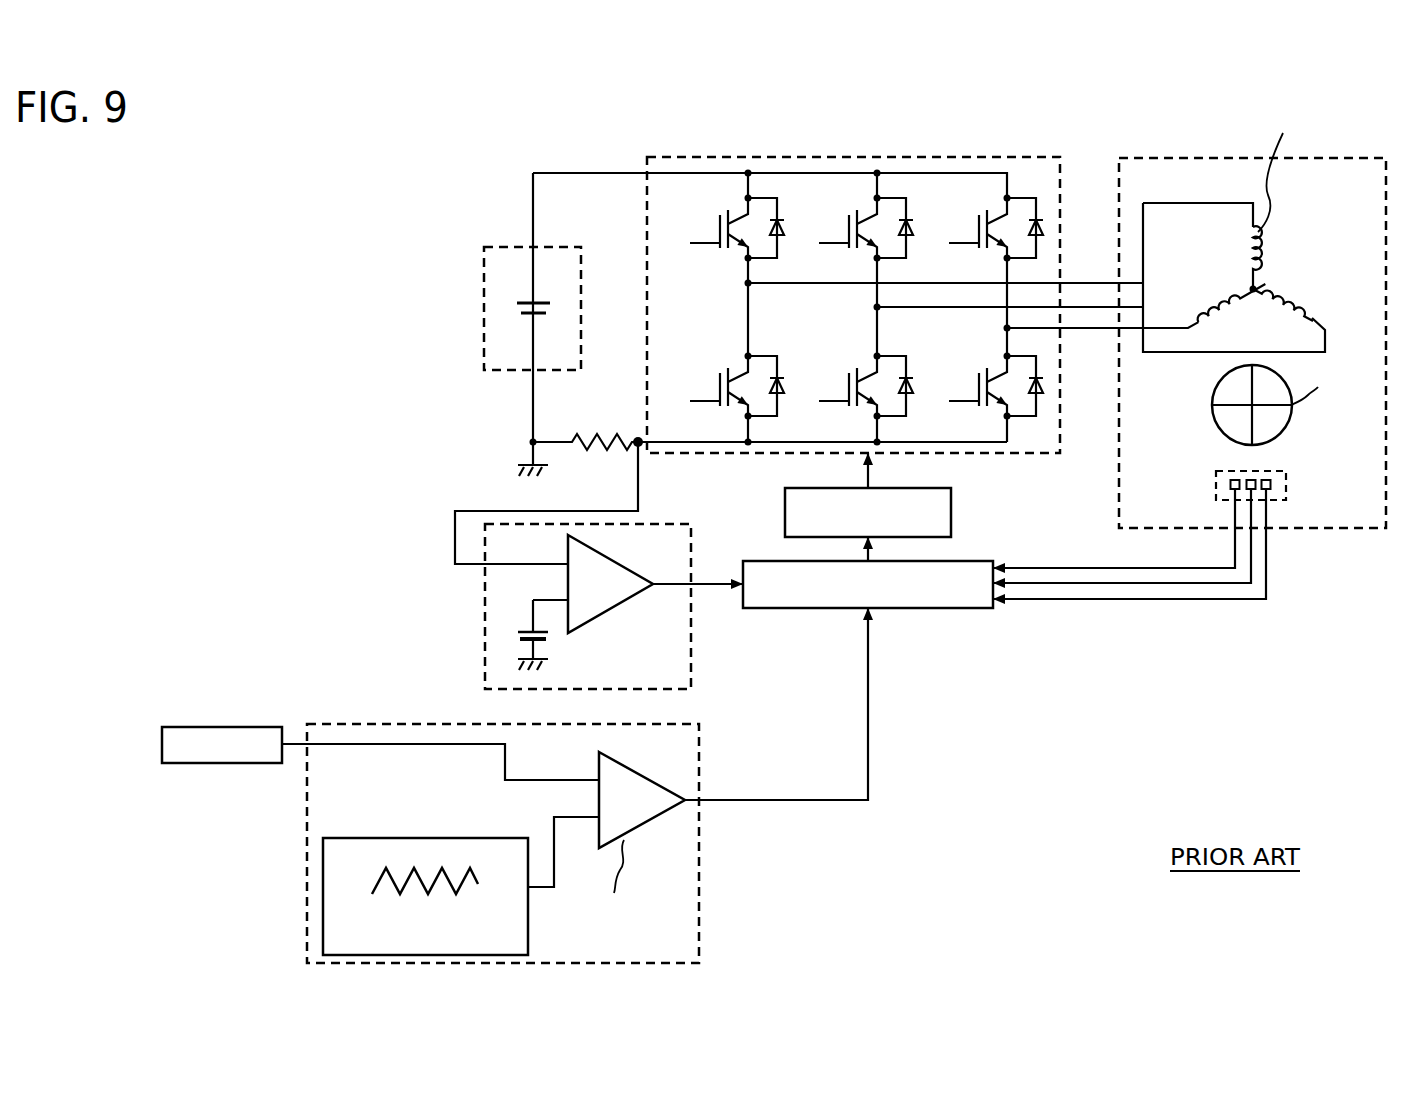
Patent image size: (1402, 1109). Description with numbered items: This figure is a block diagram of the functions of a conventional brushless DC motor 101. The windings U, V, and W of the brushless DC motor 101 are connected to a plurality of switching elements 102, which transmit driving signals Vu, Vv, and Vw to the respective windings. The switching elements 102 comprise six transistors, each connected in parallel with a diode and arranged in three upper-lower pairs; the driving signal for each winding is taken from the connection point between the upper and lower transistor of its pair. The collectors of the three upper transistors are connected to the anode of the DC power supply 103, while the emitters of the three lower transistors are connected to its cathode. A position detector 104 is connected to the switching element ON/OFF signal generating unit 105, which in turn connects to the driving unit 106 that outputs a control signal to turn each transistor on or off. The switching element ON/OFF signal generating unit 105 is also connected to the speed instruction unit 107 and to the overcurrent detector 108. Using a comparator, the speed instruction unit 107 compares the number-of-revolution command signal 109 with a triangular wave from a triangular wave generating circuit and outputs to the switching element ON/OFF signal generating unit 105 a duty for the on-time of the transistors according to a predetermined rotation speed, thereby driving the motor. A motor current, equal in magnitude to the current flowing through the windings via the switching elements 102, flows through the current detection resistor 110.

The brushless DC motor 101 is at (1140, 156).
The switching elements 102 is at (852, 157).
The DC power supply 103 is at (484, 304).
The position detector 104 is at (1275, 500).
The switching element ON/OFF signal generating unit 105 is at (788, 611).
The driving unit 106 is at (951, 512).
The speed instruction unit 107 is at (307, 824).
The overcurrent detector 108 is at (484, 619).
The number-of-revolution command signal 109 is at (222, 727).
The current detection resistor 110 is at (582, 450).